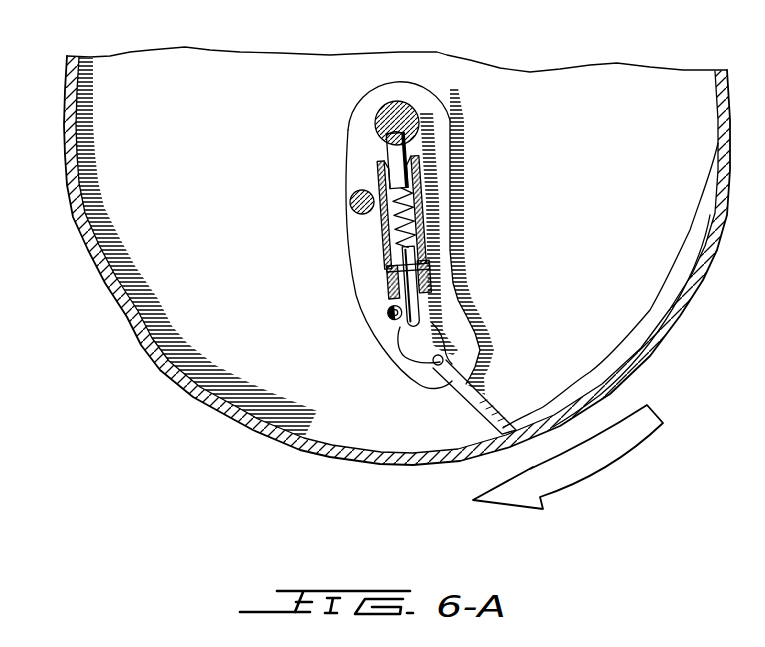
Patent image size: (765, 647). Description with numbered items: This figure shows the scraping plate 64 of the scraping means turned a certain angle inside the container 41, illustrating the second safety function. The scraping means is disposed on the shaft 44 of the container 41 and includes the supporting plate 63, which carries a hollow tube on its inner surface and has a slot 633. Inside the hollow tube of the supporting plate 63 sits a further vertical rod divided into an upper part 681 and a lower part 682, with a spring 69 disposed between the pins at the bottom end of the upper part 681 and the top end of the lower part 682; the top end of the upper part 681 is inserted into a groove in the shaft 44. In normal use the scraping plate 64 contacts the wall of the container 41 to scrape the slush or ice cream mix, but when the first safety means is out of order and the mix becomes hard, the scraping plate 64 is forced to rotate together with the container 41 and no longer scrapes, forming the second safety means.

The container 41 is at (73, 216).
The shaft 44 is at (395, 112).
The supporting plate 63 is at (443, 138).
The scraping plate 64 is at (488, 388).
The spring 69 is at (402, 214).
The upper part 681 is at (393, 158).
The lower part 682 is at (390, 288).
The slot 633 is at (392, 314).